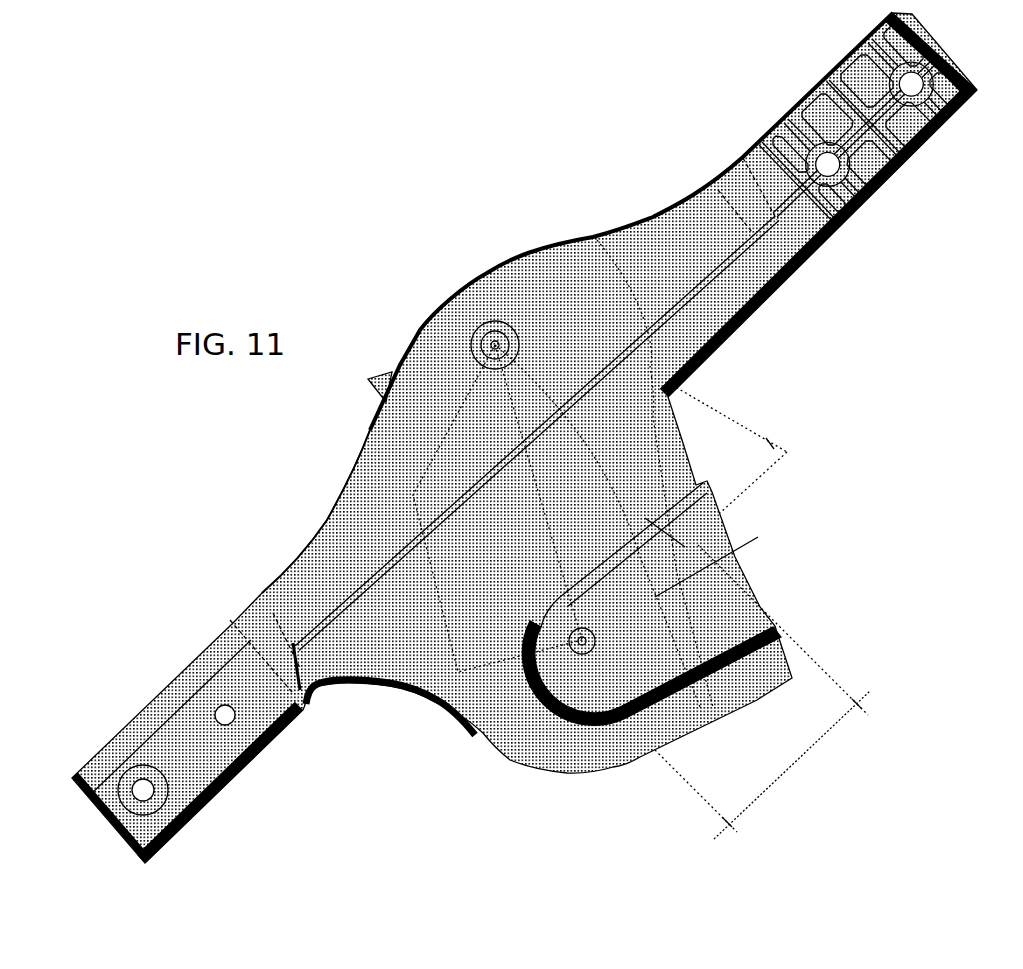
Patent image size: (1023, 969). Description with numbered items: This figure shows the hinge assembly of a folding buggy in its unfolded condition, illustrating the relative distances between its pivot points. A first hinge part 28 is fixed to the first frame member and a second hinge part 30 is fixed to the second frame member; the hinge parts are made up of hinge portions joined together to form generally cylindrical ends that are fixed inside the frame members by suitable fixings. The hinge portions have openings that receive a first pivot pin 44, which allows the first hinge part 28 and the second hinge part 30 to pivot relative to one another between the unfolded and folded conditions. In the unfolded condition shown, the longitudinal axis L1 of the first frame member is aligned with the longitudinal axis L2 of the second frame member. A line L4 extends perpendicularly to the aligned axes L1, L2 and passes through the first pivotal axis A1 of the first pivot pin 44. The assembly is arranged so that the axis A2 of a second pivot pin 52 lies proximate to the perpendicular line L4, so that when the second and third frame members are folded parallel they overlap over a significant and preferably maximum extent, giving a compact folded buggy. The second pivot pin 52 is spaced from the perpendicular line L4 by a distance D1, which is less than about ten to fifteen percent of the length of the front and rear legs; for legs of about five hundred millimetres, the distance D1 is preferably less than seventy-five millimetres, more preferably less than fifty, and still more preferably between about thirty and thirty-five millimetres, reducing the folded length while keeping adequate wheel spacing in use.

The first hinge part 28 is at (900, 182).
The second hinge part 30 is at (207, 667).
The first pivot pin 44 is at (483, 330).
The second pivot pin 52 is at (580, 654).
The first pivotal axis A1 is at (493, 357).
The axis of the second pivot pin A2 is at (595, 643).
The longitudinal axis of the first frame member L1 is at (826, 252).
The longitudinal axis of the second frame member L2 is at (292, 688).
The perpendicular line L4 is at (561, 492).
The distance D1 is at (762, 692).